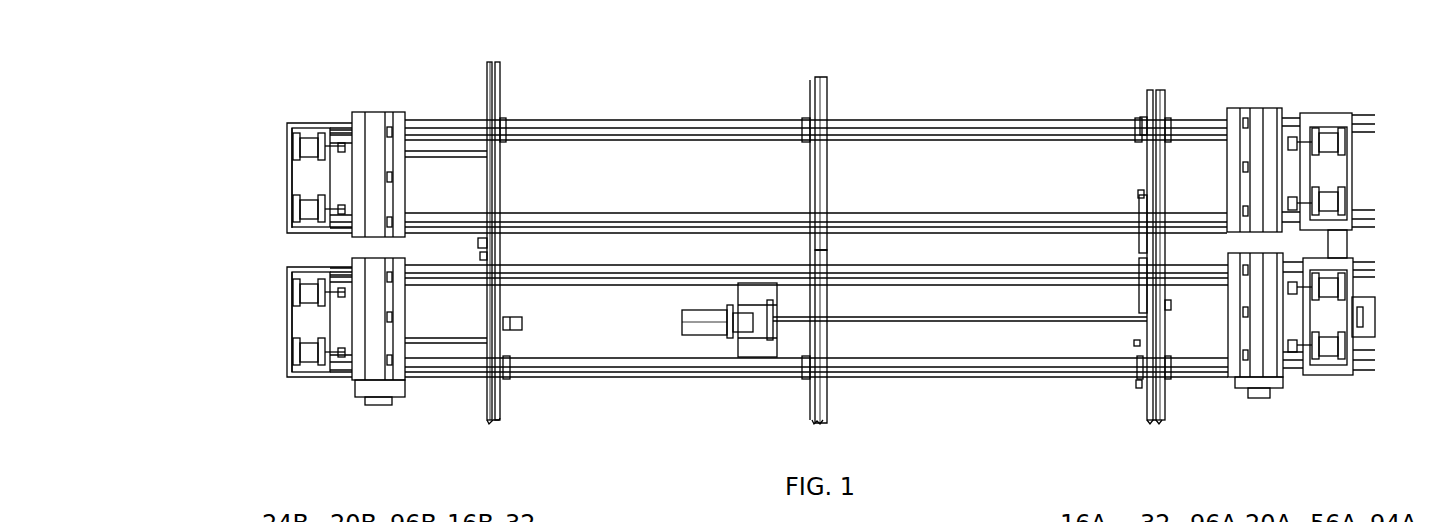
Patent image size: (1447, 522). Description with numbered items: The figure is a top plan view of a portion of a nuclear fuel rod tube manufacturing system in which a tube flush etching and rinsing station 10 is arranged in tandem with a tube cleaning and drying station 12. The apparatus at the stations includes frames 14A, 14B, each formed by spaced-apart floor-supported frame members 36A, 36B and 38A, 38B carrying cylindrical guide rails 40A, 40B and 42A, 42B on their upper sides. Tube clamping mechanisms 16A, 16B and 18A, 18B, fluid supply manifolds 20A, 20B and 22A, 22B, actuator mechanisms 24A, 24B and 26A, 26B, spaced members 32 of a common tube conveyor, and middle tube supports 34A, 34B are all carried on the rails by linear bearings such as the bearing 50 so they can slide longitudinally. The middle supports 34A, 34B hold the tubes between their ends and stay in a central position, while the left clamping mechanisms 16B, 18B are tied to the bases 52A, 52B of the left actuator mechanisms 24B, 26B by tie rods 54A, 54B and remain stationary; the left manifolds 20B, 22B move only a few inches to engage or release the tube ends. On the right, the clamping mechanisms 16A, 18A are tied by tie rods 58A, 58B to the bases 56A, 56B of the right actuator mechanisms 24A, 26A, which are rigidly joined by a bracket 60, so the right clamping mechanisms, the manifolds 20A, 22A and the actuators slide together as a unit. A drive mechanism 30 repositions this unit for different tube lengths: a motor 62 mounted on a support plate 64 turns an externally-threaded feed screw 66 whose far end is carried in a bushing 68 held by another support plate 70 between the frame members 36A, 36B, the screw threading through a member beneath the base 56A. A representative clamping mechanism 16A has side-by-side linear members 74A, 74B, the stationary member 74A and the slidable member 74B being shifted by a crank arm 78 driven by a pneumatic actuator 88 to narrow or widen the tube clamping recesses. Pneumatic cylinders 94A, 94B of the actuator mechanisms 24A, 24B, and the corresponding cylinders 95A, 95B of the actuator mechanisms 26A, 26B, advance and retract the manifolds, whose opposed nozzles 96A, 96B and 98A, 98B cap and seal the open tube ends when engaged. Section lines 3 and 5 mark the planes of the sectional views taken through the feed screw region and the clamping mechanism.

The tube flush etching and rinsing station 10 is at (1397, 382).
The tube cleaning and drying station 12 is at (1372, 85).
The frame 14A is at (886, 378).
The frame 14B is at (913, 118).
The tube clamping mechanism 16A is at (1136, 351).
The tube clamping mechanism 16B is at (488, 388).
The tube clamping mechanism 18A is at (1132, 205).
The tube clamping mechanism 18B is at (472, 243).
The fluid supply manifold 20A is at (1240, 393).
The fluid supply manifold 20B is at (380, 372).
The fluid supply manifold 22A is at (1255, 118).
The fluid supply manifold 22B is at (375, 118).
The actuator mechanism 24A is at (1351, 293).
The actuator mechanism 24B is at (306, 306).
The actuator mechanism 26A is at (1348, 146).
The actuator mechanism 26B is at (306, 163).
The drive mechanism 30 is at (713, 342).
The spaced members of tube conveyor 32 is at (500, 185).
The middle tube support 34A is at (810, 295).
The middle tube support 34B is at (810, 190).
The frame member 36A is at (977, 380).
The frame member 36B is at (975, 286).
The frame member 38A is at (952, 214).
The frame member 38B is at (1040, 125).
The cylindrical guide rail 40A is at (940, 378).
The cylindrical guide rail 40B is at (895, 284).
The cylindrical guide rail 42A is at (873, 215).
The cylindrical guide rail 42B is at (965, 128).
The linear bearing 50 is at (830, 120).
The base 52A is at (312, 126).
The base 52B is at (313, 375).
The tie rod 54A is at (486, 322).
The tie rod 54B is at (440, 150).
The base 56A is at (1320, 372).
The base 56B is at (1352, 198).
The tie rod 58A is at (1178, 330).
The tie rod 58B is at (1190, 150).
The bracket 60 is at (1328, 243).
The motor 62 is at (743, 325).
The support plate 64 is at (768, 353).
The feed screw 66 is at (1015, 323).
The bushing 68 is at (1363, 318).
The support plate 70 is at (1375, 309).
The linear member 74A is at (1148, 310).
The linear member 74B is at (1143, 315).
The crank arm 78 is at (1140, 387).
The actuator 88 is at (1140, 372).
The pneumatic cylinder 94A is at (1328, 275).
The pneumatic cylinder 94B is at (294, 292).
The upper roller 95A is at (1327, 188).
The upper roller 95B is at (294, 146).
The nozzles 96A is at (1243, 355).
The nozzles 96B is at (392, 277).
The nozzles 98A is at (1243, 123).
The nozzles 98B is at (392, 132).
The section line 3- 3 is at (1395, 420).
The section line 5- 5 is at (1115, 300).